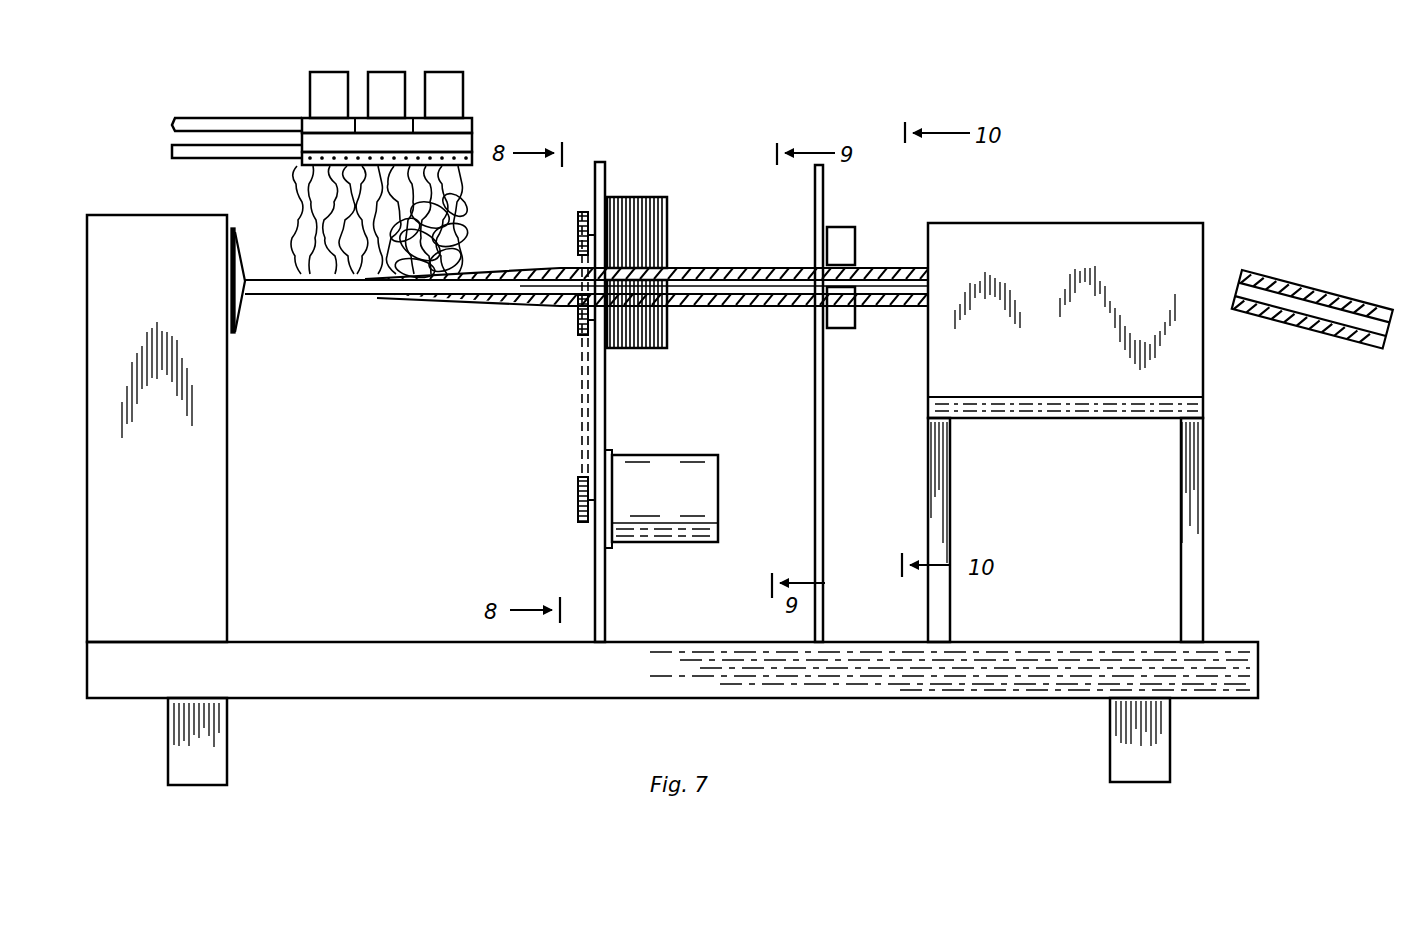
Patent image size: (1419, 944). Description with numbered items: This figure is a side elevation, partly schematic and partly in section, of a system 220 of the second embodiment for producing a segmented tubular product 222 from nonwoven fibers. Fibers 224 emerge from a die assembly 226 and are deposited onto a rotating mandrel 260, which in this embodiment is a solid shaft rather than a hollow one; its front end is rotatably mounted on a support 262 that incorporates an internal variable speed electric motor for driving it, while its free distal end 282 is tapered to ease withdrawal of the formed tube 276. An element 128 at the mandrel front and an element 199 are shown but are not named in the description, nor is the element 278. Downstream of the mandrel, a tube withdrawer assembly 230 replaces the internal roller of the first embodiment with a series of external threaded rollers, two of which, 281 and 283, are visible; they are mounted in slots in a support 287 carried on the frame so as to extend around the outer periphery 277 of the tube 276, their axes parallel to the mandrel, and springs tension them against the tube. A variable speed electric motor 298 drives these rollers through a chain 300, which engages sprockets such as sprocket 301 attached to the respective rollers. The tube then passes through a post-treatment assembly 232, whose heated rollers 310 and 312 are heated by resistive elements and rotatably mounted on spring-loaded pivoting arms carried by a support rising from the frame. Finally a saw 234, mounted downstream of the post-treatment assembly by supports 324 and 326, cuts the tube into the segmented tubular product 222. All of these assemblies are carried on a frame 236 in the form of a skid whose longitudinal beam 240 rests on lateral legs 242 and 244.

The conical nozzle 128 is at (244, 325).
The support plate 199 is at (583, 212).
The system 220 is at (852, 77).
The segmented tubular product 222 is at (1300, 290).
The fibers 224 is at (305, 188).
The die assembly 226 is at (410, 66).
The tube withdrawer assembly 230 is at (680, 342).
The post-treatment assembly 232 is at (884, 236).
The saw 234 is at (1122, 232).
The frame 236 is at (82, 684).
The longitudinal beam 240 is at (1230, 663).
The lateral leg 242 is at (207, 737).
The lateral leg 244 is at (1150, 733).
The mandrel 260 is at (407, 283).
The support 262 is at (167, 225).
The tube 276 is at (490, 308).
The outer periphery 277 is at (920, 272).
The upper rod portion 278 is at (527, 278).
The threaded roller 281 is at (667, 232).
The free distal end 282 is at (540, 300).
The threaded roller 283 is at (667, 322).
The support 287 is at (595, 624).
The variable speed electric motor 298 is at (692, 455).
The chain 300 is at (580, 388).
The sprocket 301 is at (583, 335).
The heated roller 310 is at (842, 227).
The heated roller 312 is at (843, 320).
The support 324 is at (943, 505).
The support 326 is at (1190, 505).